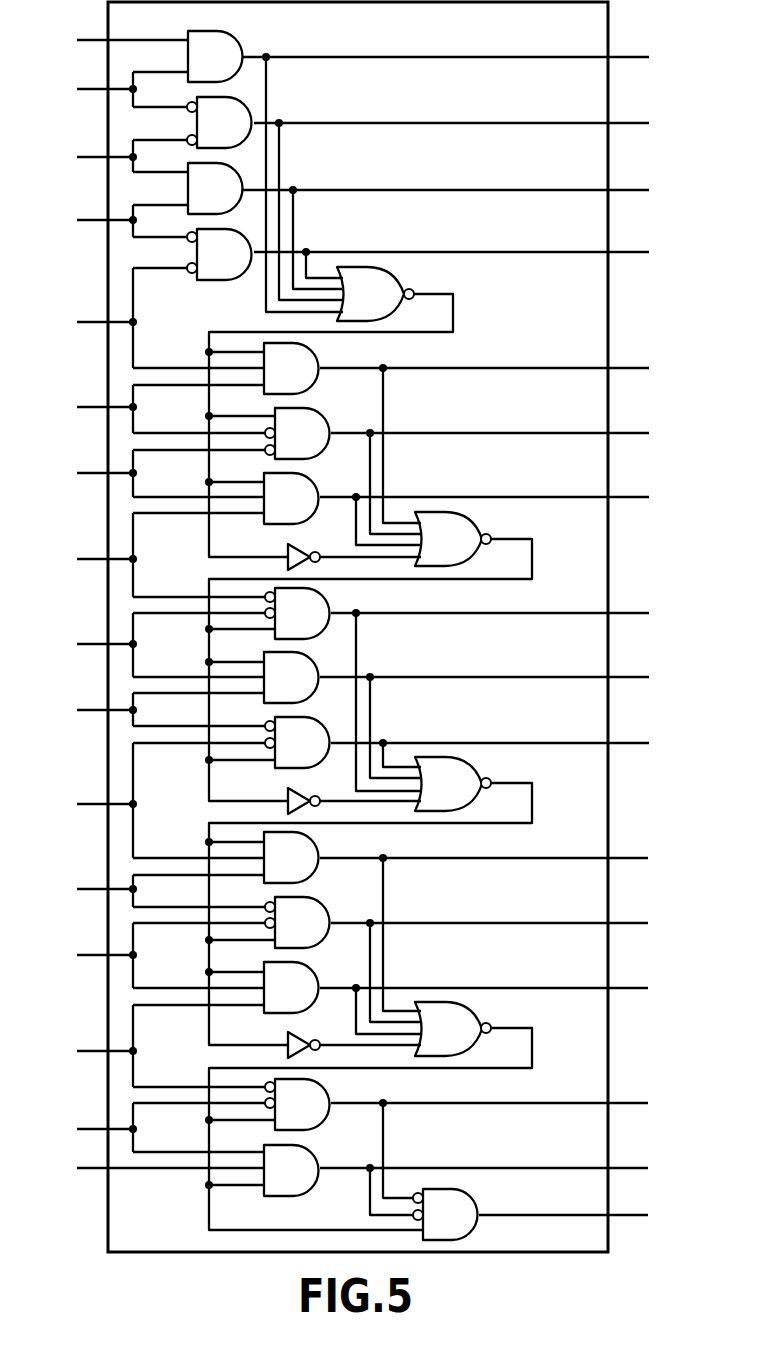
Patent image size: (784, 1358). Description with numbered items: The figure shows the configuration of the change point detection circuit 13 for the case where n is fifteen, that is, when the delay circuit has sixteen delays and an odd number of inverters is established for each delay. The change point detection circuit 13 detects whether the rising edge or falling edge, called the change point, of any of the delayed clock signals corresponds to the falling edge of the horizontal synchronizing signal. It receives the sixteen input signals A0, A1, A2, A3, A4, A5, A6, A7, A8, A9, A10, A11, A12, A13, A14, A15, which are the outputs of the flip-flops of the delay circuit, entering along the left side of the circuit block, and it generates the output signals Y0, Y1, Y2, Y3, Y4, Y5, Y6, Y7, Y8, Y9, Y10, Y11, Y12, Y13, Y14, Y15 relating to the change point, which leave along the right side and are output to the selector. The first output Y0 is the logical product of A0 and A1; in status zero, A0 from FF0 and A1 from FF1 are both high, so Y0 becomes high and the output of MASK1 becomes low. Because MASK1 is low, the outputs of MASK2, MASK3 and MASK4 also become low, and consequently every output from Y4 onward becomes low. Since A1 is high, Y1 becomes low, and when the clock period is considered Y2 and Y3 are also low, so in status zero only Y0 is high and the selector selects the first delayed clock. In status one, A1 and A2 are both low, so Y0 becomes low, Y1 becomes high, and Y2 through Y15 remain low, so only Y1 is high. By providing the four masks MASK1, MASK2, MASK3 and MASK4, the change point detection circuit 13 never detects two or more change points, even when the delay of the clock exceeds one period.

The change point detection circuit 13 is at (609, 29).
The signal A0 is at (117, 41).
The signal A1 is at (117, 89).
The signal A2 is at (117, 156).
The signal A3 is at (117, 221).
The signal A4 is at (155, 318).
The signal A5 is at (155, 409).
The signal A6 is at (155, 473).
The signal A7 is at (155, 555).
The signal A8 is at (155, 645).
The signal A9 is at (155, 709).
The signal A10 is at (152, 800).
The signal A11 is at (152, 891).
The signal A12 is at (152, 955).
The signal A13 is at (152, 1046).
The signal A14 is at (152, 1127).
The signal A15 is at (152, 1169).
The signal Y0 is at (460, 59).
The signal Y1 is at (466, 125).
The signal Y2 is at (460, 192).
The signal Y3 is at (466, 254).
The signal Y4 is at (499, 370).
The signal Y5 is at (504, 435).
The signal Y6 is at (499, 499).
The signal Y7 is at (504, 615).
The signal Y8 is at (499, 679).
The signal Y9 is at (504, 745).
The signal Y10 is at (500, 860).
The signal Y11 is at (506, 925).
The signal Y12 is at (500, 990).
The signal Y13 is at (506, 1105).
The signal Y14 is at (500, 1170).
The signal Y15 is at (580, 1217).
The mask 1 MASK1 is at (412, 292).
The mask 2 MASK2 is at (490, 538).
The mask 3 MASK3 is at (490, 784).
The mask 4 MASK4 is at (490, 1028).